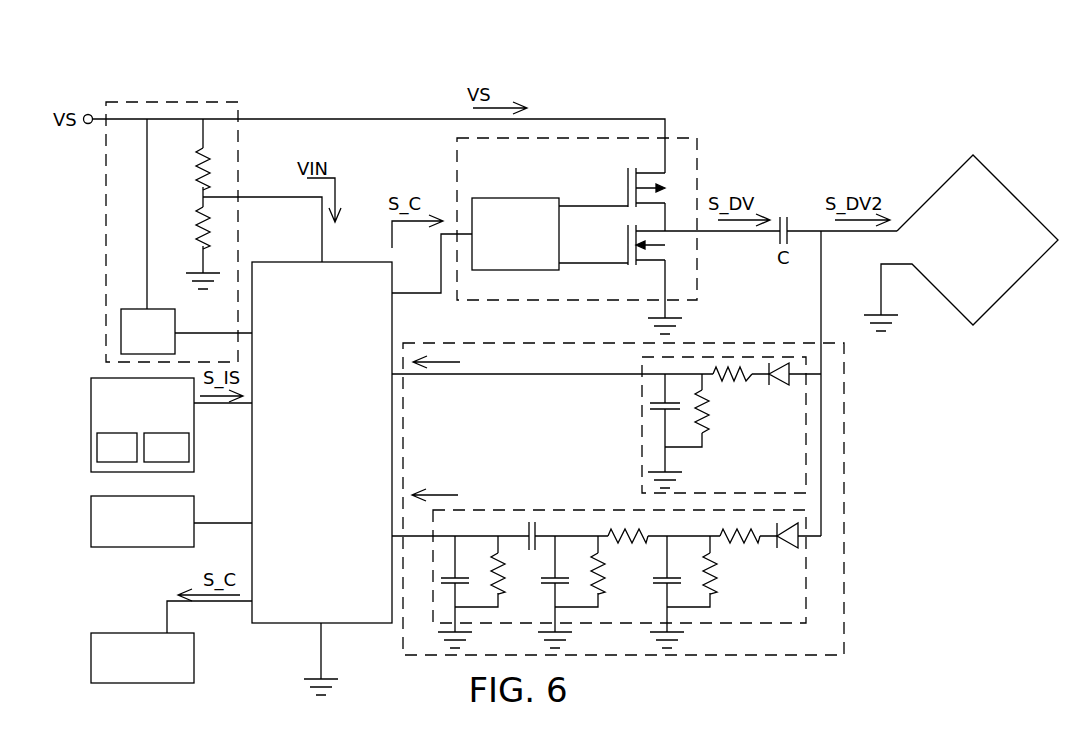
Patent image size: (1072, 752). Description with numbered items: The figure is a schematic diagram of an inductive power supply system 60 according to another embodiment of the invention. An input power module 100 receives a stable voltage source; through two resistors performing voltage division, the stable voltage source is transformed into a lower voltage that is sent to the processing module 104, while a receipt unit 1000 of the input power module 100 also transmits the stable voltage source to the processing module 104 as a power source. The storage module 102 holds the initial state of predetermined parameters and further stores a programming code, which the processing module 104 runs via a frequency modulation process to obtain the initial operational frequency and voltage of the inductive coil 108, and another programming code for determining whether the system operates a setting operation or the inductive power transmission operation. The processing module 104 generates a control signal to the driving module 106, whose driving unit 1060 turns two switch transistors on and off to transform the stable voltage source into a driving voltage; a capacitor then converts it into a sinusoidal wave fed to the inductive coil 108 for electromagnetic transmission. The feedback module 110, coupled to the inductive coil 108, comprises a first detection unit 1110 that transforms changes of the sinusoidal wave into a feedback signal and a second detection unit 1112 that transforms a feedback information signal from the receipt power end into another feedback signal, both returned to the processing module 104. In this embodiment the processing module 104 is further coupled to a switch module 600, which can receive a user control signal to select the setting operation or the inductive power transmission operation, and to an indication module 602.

The inductive power supply system 60 is at (895, 88).
The input power module 100 is at (137, 101).
The receipt unit 1000 is at (131, 343).
The storage module 102 is at (108, 378).
The processing module 104 is at (308, 262).
The driving module 106 is at (697, 137).
The driving unit 1060 is at (496, 245).
The inductive coil 108 is at (930, 196).
The feedback module 110 is at (740, 343).
The first detection unit 1110 is at (807, 438).
The second detection unit 1112 is at (807, 593).
The switch module 600 is at (90, 519).
The indication module 602 is at (110, 633).